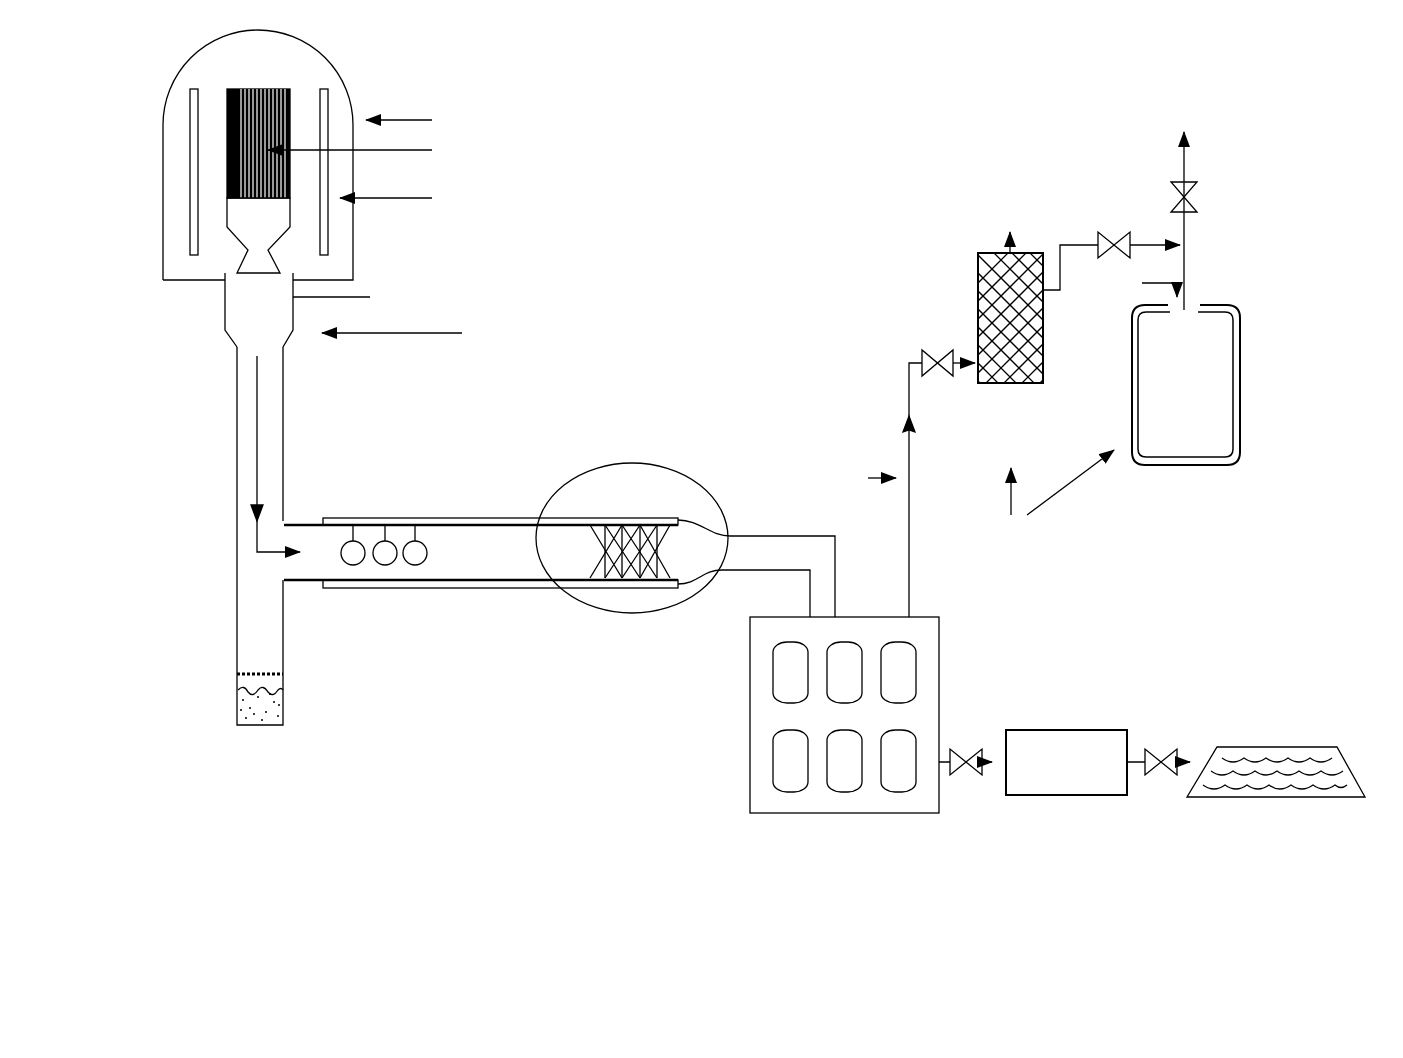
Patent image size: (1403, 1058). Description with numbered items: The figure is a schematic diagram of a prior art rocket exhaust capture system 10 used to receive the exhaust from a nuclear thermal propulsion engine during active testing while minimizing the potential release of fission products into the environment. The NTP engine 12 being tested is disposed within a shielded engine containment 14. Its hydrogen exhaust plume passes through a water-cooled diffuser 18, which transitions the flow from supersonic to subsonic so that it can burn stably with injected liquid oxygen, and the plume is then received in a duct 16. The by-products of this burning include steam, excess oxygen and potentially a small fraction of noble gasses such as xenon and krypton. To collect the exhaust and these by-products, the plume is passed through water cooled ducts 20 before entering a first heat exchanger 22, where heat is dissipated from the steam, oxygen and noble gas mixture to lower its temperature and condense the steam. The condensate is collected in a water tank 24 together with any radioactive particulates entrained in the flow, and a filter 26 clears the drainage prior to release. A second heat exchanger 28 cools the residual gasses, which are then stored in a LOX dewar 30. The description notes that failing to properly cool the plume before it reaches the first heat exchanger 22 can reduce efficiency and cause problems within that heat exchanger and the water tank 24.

The rocket exhaust capture system 10 is at (746, 332).
The NTP engine 12 is at (312, 106).
The shielded engine containment 14 is at (161, 202).
The duct 16 is at (230, 456).
The water-cooled diffuser 18 is at (304, 346).
The water cooled ducts 20 is at (500, 506).
The first heat exchanger 22 is at (586, 618).
The water tank 24 is at (954, 659).
The filter 26 is at (1048, 806).
The second heat exchanger 28 is at (966, 293).
The LOX dewar 30 is at (1262, 359).